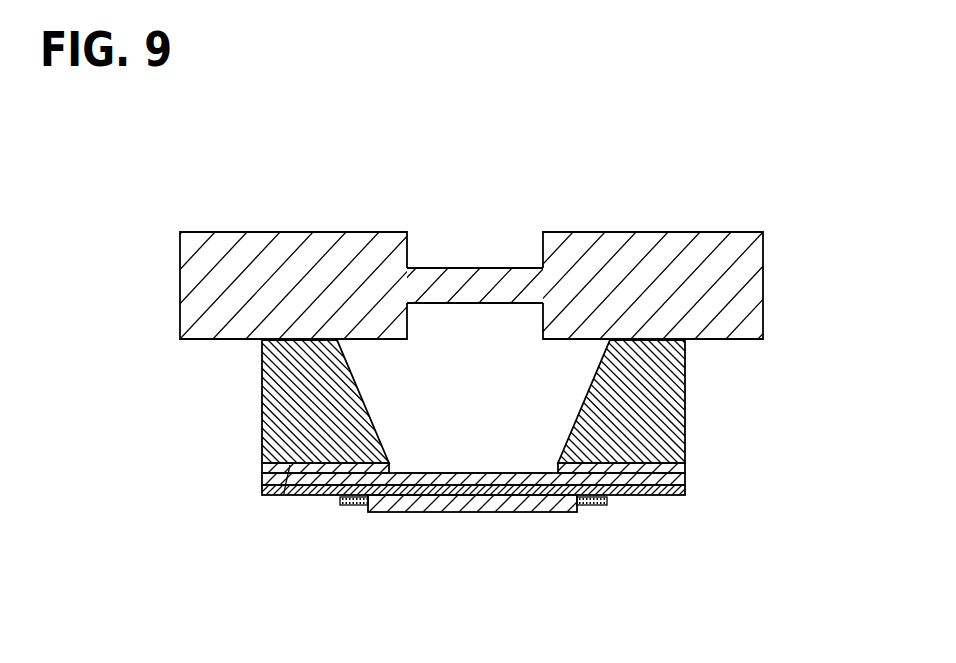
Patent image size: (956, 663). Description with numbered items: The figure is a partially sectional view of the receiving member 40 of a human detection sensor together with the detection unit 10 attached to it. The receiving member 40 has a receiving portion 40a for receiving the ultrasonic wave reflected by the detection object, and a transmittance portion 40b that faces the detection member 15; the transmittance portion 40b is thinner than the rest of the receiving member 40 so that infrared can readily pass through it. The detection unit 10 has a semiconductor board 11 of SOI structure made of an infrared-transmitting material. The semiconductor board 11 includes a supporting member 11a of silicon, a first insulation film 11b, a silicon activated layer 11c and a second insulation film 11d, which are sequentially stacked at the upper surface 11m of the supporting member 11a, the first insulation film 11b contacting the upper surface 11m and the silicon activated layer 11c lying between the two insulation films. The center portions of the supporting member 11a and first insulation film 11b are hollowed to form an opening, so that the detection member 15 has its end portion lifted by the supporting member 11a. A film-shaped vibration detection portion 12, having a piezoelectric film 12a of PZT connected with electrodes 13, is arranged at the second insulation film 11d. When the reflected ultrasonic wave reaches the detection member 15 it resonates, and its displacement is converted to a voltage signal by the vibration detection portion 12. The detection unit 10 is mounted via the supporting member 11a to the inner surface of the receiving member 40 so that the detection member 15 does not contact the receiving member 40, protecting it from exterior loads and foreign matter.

The detection unit 10 is at (212, 468).
The semiconductor board 11 is at (700, 426).
The supporting member 11a is at (683, 398).
The first insulation film 11b is at (683, 466).
The silicon activated layer 11c is at (683, 478).
The second insulation film 11d is at (683, 492).
The upper surface 11m is at (284, 494).
The vibration detection portion 12 is at (500, 513).
The piezoelectric film 12a is at (475, 505).
The electrodes 13 is at (358, 505).
The detection member 15 is at (474, 462).
The receiving member 40 is at (645, 247).
The receiving portion 40a is at (297, 232).
The transmittance portion 40b is at (455, 268).